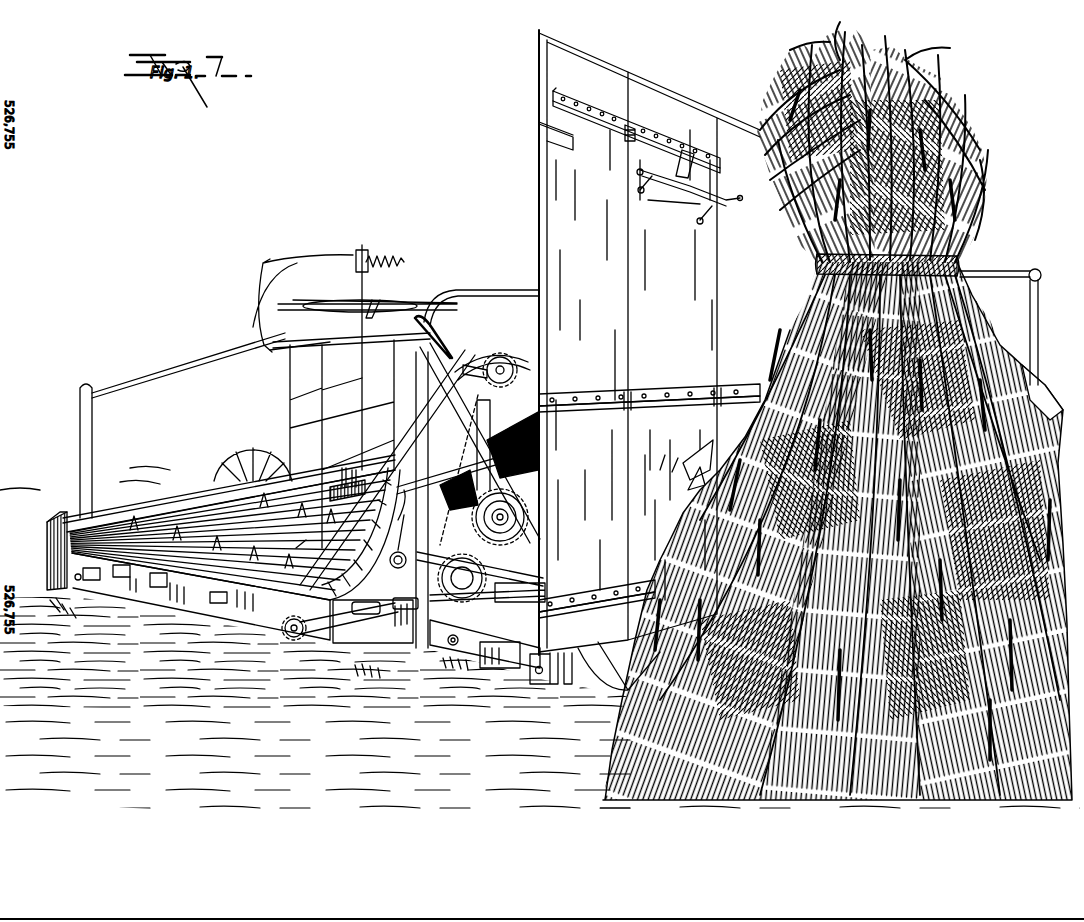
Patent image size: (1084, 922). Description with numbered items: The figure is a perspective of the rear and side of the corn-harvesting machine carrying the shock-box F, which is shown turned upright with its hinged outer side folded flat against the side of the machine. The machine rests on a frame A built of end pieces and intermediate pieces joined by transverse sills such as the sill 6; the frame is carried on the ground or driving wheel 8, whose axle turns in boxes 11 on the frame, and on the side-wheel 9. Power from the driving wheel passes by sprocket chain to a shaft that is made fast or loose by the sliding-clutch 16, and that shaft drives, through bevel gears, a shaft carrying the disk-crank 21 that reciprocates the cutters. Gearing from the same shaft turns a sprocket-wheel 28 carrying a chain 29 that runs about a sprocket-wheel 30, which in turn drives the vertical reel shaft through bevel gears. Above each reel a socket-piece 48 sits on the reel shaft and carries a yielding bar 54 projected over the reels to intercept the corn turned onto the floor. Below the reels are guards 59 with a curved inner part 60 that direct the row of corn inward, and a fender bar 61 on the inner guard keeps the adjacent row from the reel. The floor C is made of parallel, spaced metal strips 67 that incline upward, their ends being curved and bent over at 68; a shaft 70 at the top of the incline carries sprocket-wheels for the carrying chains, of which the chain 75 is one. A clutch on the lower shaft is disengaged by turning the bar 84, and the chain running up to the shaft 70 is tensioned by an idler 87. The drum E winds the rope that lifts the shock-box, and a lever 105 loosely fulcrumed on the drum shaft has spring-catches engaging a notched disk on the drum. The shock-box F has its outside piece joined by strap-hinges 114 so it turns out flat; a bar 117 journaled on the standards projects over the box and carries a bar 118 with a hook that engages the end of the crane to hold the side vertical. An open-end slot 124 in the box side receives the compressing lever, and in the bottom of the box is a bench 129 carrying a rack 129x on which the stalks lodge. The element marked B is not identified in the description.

The shock-box F is at (649, 342).
The open end slot 124 is at (566, 146).
The disk-crank 21 is at (548, 322).
The strap-hinges 114 is at (648, 146).
The bench 129 is at (688, 196).
The rack 129x is at (676, 178).
The ground or driving wheel 8 is at (595, 666).
The boxes 11 is at (837, 411).
The bar 117 is at (1000, 265).
The bar 118 is at (1038, 336).
The floor C is at (223, 547).
The sliding-clutch 16 is at (88, 523).
The sill 6 is at (266, 510).
The carrying chain 75 is at (293, 494).
The fender bar 61 is at (280, 333).
The metal strips 67 is at (292, 550).
The side-wheel 9 is at (249, 452).
The binder table plate B is at (373, 298).
The socket-piece 48 is at (370, 262).
The bar 54 is at (290, 275).
The curved inner part 60 is at (300, 332).
The guards 59 is at (461, 429).
The shaft 70 is at (501, 352).
The curved ends of slats 68 is at (492, 357).
The drum E is at (524, 536).
The frame A is at (485, 644).
The bar 84 is at (404, 520).
The idler 87 is at (390, 551).
The sprocket-wheel 30 is at (331, 619).
The chain 29 is at (380, 596).
The sprocket-wheel 28 is at (373, 621).
The lever 105 is at (540, 468).